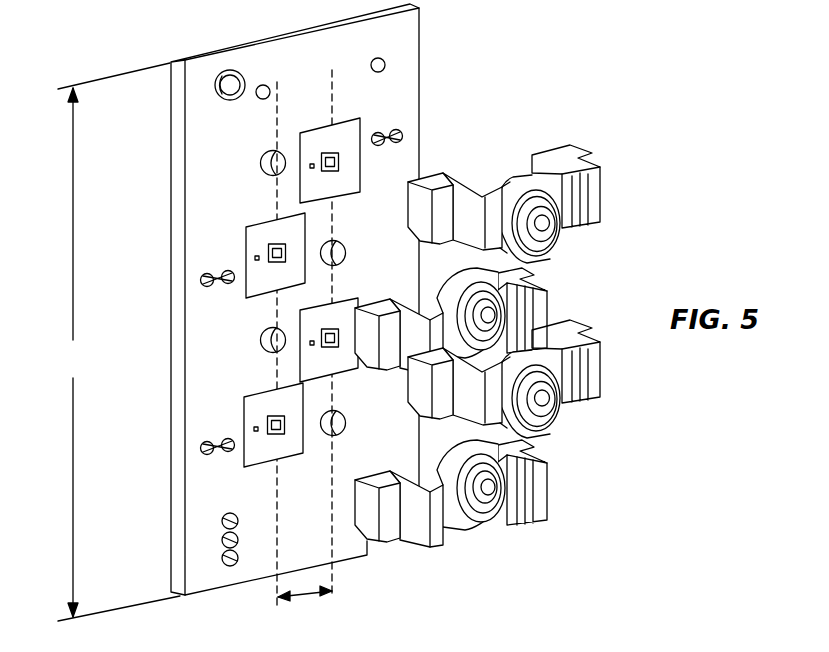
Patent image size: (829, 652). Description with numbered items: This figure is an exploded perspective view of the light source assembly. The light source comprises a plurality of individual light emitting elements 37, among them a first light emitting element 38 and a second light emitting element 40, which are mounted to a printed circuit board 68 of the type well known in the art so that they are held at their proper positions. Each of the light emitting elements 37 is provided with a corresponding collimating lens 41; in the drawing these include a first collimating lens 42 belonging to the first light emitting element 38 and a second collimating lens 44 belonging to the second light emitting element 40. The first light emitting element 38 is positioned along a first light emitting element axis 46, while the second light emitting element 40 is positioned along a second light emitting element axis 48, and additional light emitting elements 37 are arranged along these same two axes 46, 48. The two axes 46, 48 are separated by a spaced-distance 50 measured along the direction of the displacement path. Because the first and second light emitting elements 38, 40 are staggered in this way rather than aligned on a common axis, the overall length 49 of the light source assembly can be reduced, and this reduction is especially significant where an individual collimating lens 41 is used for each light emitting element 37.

The printed circuit board 68 is at (229, 47).
The first light emitting element 38 is at (333, 163).
The second light emitting element 40 is at (275, 250).
The light emitting elements 37 is at (292, 318).
The overall length 49 is at (117, 342).
The second collimating lens 44 is at (597, 195).
The first collimating lens 42 is at (552, 304).
The collimating lens 41 is at (548, 477).
The first light emitting element axis 46 is at (276, 592).
The second light emitting element axis 48 is at (332, 573).
The spaced-distance 50 is at (302, 597).